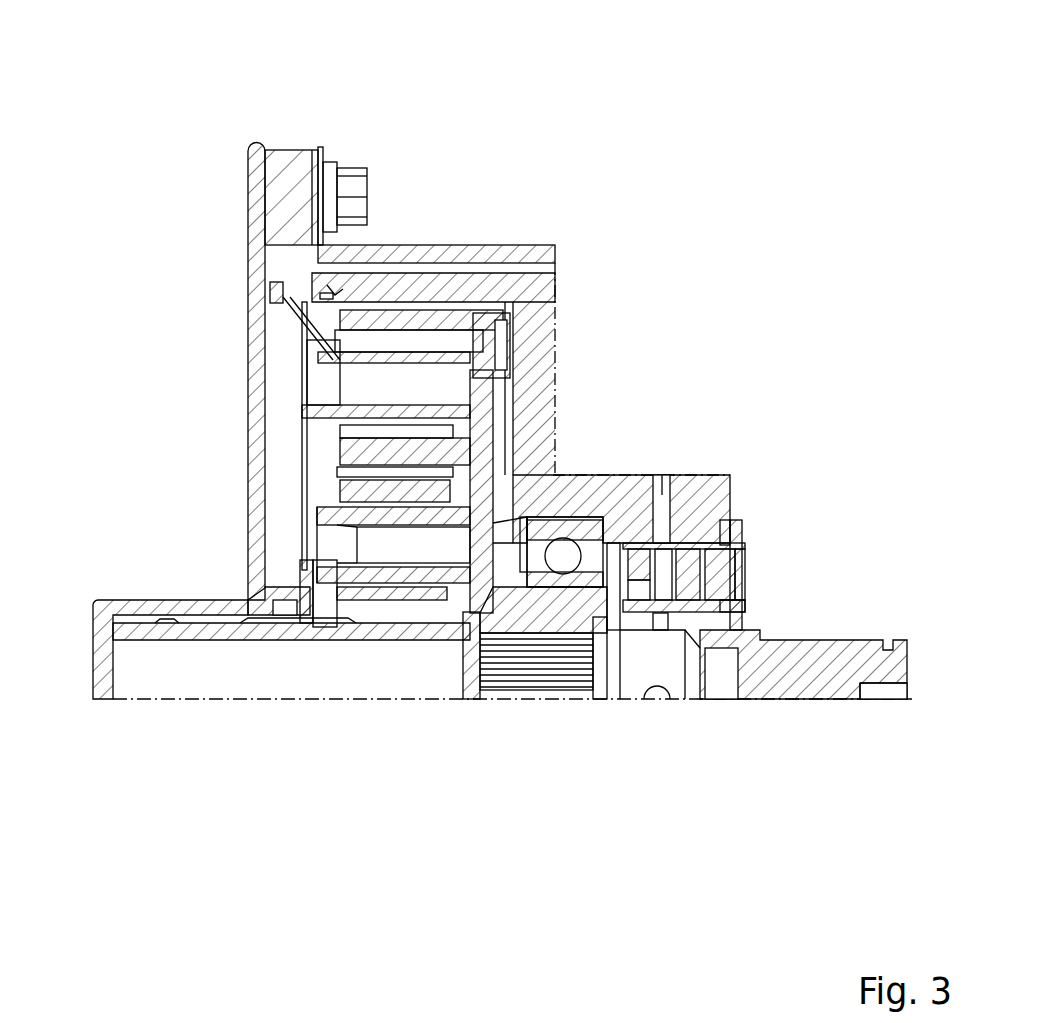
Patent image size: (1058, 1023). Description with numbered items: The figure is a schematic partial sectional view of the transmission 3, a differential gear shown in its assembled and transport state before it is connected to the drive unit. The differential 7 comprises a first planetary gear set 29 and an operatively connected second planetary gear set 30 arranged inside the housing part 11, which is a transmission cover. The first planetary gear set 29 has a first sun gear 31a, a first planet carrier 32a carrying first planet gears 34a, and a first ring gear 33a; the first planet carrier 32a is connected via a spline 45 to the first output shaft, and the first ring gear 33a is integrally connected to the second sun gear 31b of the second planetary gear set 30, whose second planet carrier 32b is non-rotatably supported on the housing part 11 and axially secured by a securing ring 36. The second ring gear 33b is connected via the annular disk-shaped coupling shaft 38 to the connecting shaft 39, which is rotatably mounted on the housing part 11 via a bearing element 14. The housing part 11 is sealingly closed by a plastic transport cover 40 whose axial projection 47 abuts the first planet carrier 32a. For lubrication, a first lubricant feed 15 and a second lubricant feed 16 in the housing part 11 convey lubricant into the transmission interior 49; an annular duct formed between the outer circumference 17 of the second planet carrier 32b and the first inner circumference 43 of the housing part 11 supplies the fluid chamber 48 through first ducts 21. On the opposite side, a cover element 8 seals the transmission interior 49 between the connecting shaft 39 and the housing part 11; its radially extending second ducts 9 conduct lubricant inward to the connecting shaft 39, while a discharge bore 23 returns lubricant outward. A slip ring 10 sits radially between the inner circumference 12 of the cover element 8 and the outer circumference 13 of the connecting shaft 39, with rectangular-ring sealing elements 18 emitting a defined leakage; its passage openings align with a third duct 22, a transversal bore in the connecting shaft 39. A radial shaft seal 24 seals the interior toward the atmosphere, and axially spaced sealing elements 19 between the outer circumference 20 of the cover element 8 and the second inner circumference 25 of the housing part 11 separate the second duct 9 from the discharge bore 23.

The transmission 3 is at (552, 183).
The differential 7 is at (280, 663).
The cover element 8 is at (735, 540).
The second ducts 9 is at (732, 572).
The slip ring 10 is at (705, 590).
The housing part 11 is at (545, 312).
The inner circumference 12 is at (657, 617).
The outer circumference 13 is at (728, 607).
The bearing element 14 is at (580, 522).
The first lubricant feed 15 is at (322, 312).
The second lubricant feed 16 is at (663, 543).
The outer circumference 17 is at (340, 292).
The sealing elements 18 is at (635, 612).
The sealing elements 19 is at (640, 543).
The outer circumference 20 is at (693, 543).
The first ducts 21 is at (298, 340).
The third duct 22 is at (663, 575).
The discharge bore 23 is at (745, 552).
The radial shaft seal 24 is at (797, 653).
The second inner circumference 25 is at (604, 545).
The first planetary gear set 29 is at (320, 638).
The second planetary gear set 30 is at (553, 347).
The first sun gear 31a is at (380, 630).
The second sun gear 31b is at (261, 531).
The first planet carrier 32a is at (348, 650).
The second planet carrier 32b is at (288, 323).
The first ring gear 33a is at (367, 451).
The second ring gear 33b is at (438, 323).
The first planet gears 34a is at (398, 598).
The securing ring 36 is at (272, 288).
The coupling shaft 38 is at (476, 355).
The connecting shaft 39 is at (860, 660).
The transport cover 40 is at (248, 193).
The first inner circumference 43 is at (422, 310).
The spline 45 is at (532, 642).
The axial projection 47 is at (288, 592).
The fluid chamber 48 is at (330, 390).
The transmission interior 49 is at (330, 433).